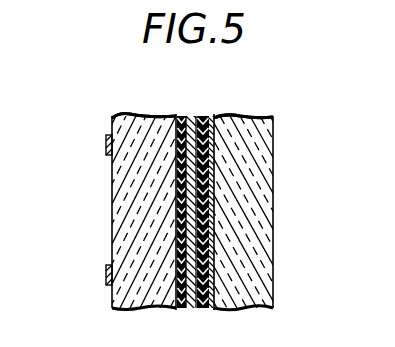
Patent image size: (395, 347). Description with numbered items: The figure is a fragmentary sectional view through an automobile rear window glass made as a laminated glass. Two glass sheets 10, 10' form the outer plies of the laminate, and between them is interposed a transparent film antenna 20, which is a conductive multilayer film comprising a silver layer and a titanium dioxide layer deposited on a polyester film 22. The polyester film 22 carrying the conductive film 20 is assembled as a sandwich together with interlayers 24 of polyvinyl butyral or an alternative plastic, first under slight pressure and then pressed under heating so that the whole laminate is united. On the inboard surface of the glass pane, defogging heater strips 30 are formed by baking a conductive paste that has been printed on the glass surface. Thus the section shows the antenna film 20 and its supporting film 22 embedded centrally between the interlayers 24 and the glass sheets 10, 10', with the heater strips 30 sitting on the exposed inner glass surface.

The glass sheet 10 is at (143, 212).
The glass sheet 10' is at (243, 212).
The transparent film antenna 20 is at (198, 114).
The polyester film 22 is at (188, 114).
The interlayer 24 is at (177, 118).
The defogging heater strip 30 is at (106, 144).